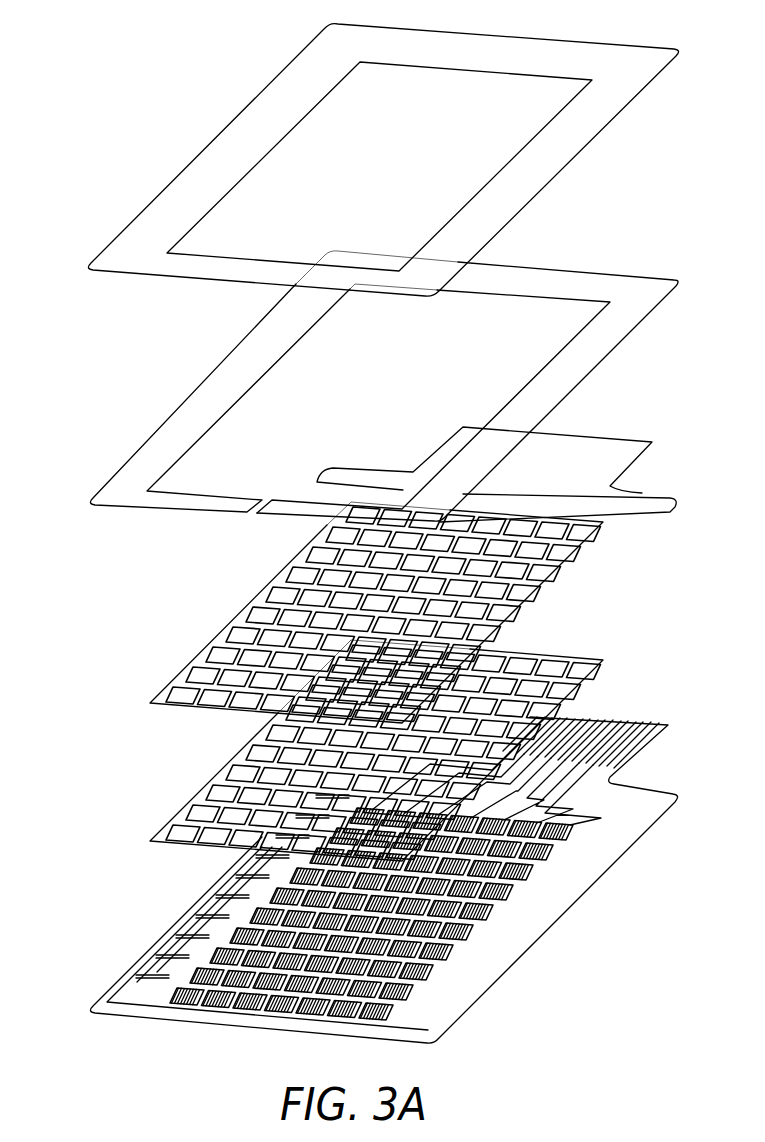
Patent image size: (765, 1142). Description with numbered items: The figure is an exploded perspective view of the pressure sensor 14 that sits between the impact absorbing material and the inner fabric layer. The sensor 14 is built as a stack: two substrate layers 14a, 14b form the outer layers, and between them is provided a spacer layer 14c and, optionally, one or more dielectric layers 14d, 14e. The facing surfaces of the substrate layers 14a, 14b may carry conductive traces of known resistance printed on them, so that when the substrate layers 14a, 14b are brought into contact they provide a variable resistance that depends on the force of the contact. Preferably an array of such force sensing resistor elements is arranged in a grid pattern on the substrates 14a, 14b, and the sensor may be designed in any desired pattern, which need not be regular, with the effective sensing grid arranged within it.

The sensor 14 is at (181, 57).
The substrate layer 14a is at (110, 245).
The spacer layer 14c is at (111, 478).
The dielectric layer 14d is at (160, 690).
The dielectric layer 14e is at (160, 830).
The substrate layer 14b is at (105, 993).